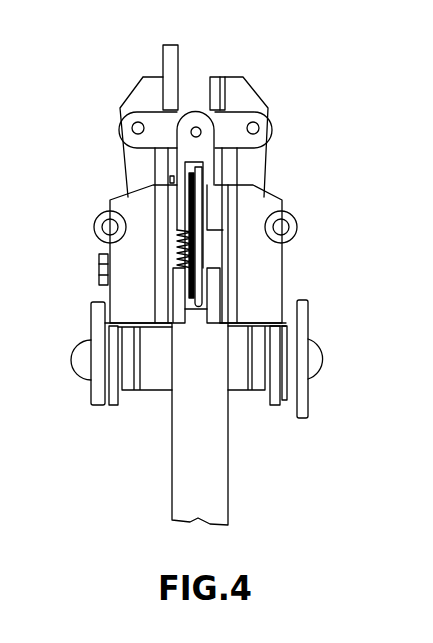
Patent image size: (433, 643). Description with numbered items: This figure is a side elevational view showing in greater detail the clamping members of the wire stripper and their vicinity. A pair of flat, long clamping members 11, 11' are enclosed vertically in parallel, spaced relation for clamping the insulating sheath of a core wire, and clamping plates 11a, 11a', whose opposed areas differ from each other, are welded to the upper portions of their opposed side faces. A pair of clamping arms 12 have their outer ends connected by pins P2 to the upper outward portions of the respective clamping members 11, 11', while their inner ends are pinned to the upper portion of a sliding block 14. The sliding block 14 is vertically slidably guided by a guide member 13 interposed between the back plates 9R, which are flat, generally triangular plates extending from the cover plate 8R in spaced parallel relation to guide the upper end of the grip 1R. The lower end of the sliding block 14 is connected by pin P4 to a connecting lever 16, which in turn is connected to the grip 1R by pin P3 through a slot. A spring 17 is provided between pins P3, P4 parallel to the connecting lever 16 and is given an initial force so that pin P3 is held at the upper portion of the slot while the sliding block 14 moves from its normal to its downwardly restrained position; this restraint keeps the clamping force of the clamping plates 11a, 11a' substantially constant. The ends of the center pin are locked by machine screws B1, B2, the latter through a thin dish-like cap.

The grip 1R is at (227, 478).
The cover plate 8R is at (268, 204).
The back plates 9R is at (158, 286).
The clamping member 11 is at (128, 127).
The clamping member 11' is at (262, 125).
The clamping plate 11a is at (154, 56).
The clamping plate 11a' is at (237, 63).
The clamping arms 12 is at (142, 145).
The guide member 13 is at (173, 187).
The sliding block 14 is at (190, 116).
The connecting lever 16 is at (198, 250).
The spring 17 is at (178, 245).
The pins P2 is at (290, 107).
The pin P3 is at (222, 293).
The pin P4 is at (215, 183).
The machine screw B1 is at (75, 363).
The machine screw B2 is at (322, 367).